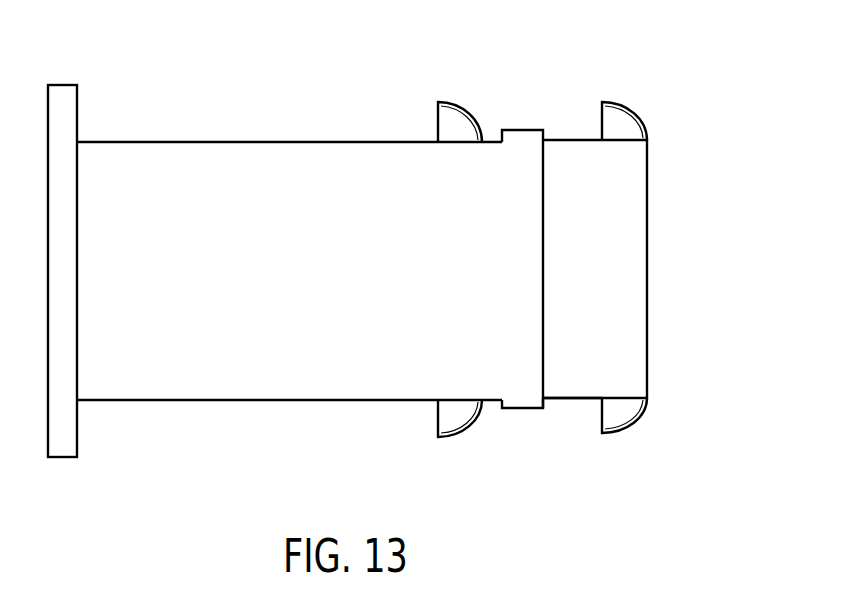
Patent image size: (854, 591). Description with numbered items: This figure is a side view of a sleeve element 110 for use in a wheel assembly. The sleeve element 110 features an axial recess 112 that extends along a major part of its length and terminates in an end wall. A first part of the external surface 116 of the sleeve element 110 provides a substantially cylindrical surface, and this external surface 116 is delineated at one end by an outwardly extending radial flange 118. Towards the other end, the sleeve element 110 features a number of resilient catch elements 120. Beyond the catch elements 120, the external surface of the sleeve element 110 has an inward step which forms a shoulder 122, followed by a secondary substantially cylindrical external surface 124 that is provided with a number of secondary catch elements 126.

The sleeve element 110 is at (638, 78).
The axial recess 112 is at (650, 262).
The first part of the external surface 116 is at (212, 330).
The radial flange 118 is at (58, 428).
The resilient catch elements 120 is at (461, 412).
The shoulder 122 is at (544, 401).
The secondary substantially cylindrical external surface 124 is at (582, 398).
The secondary catch elements 126 is at (622, 412).